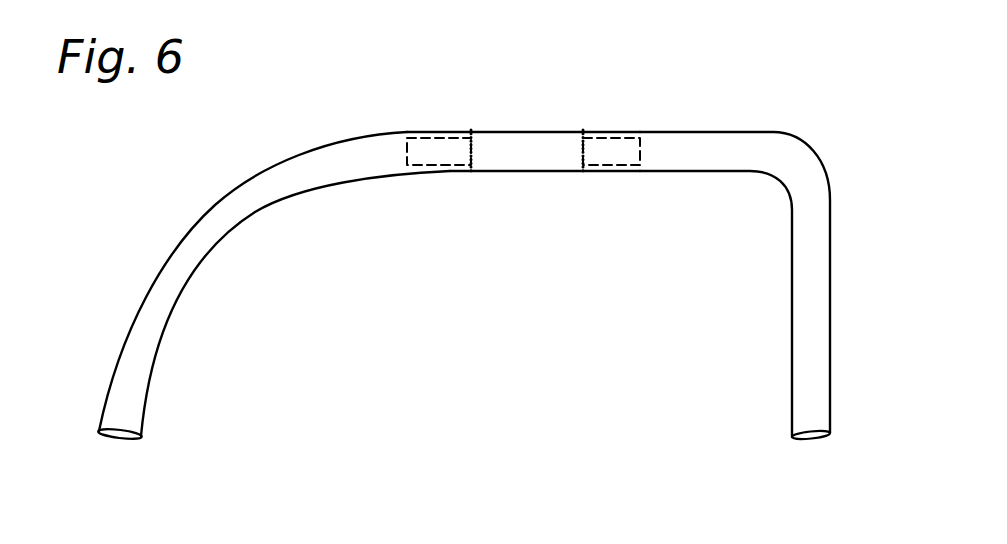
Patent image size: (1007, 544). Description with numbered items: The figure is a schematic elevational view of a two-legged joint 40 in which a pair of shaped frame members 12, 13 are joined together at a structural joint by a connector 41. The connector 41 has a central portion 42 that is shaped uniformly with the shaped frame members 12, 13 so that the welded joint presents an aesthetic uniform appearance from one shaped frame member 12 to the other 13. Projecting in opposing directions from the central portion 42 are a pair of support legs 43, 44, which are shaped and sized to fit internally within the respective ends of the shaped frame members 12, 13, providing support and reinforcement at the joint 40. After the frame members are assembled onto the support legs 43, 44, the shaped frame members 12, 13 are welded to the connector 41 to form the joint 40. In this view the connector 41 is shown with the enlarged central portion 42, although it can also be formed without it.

The shaped frame member 12 is at (142, 372).
The shaped frame member 13 is at (806, 390).
The two-legged joint 40 is at (598, 85).
The connector 41 is at (533, 172).
The central portion 42 is at (539, 143).
The support leg 43 is at (413, 140).
The support leg 44 is at (623, 155).